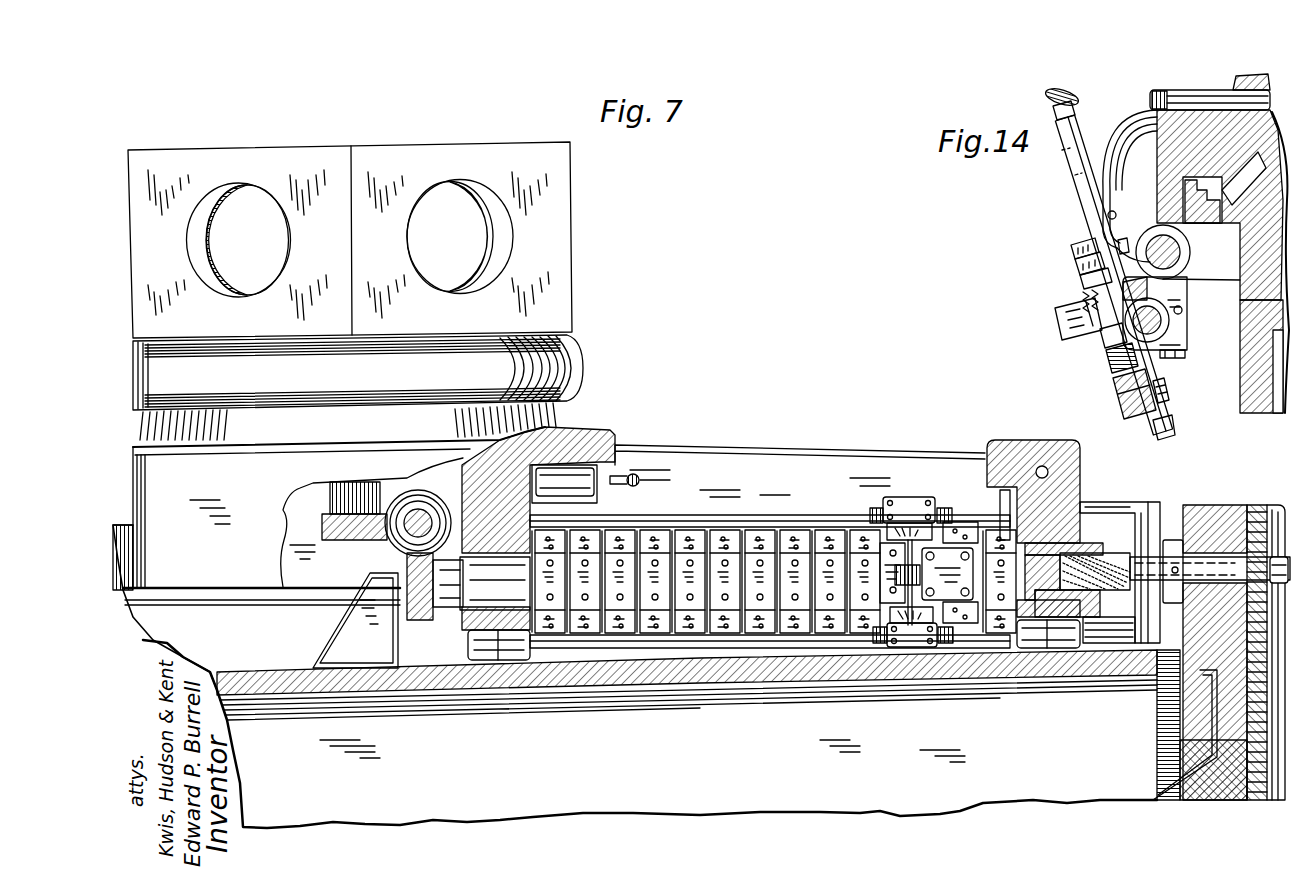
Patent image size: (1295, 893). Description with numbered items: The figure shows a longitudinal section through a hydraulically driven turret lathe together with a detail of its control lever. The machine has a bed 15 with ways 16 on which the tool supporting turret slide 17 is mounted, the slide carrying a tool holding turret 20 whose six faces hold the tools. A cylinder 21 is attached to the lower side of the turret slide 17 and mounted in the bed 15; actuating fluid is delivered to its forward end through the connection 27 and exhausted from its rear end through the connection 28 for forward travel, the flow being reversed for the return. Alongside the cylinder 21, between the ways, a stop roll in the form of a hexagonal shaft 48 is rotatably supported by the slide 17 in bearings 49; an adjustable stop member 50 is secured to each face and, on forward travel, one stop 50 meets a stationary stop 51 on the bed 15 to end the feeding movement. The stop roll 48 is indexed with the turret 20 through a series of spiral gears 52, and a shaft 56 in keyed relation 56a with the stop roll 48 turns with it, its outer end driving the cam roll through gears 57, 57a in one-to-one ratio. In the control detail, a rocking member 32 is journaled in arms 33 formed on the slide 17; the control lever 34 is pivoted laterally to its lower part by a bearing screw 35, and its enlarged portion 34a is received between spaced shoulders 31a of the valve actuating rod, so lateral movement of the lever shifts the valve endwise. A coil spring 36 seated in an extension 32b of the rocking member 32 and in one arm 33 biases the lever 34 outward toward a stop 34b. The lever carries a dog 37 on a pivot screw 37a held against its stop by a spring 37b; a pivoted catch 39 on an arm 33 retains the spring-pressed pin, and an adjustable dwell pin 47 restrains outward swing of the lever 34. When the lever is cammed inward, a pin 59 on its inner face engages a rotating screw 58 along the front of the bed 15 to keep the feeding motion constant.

In FIG. 7, the bed 15 is at (680, 734).
In FIG. 14, the bed 15 is at (1255, 370).
In FIG. 7, the ways 16 is at (128, 528).
In FIG. 14, the ways 16 is at (1230, 160).
In FIG. 7, the turret slide 17 is at (683, 457).
In FIG. 14, the turret slide 17 is at (1178, 100).
In FIG. 7, the tool holding turret 20 is at (555, 228).
In FIG. 7, the cylinder 21 is at (1103, 508).
In FIG. 7, the delivery connection 27 is at (640, 480).
In FIG. 7, the delivery connection 28 is at (1042, 466).
In FIG. 14, the spaced shoulders 31a is at (1165, 333).
In FIG. 14, the rocking member 32 is at (1118, 395).
In FIG. 14, the extension of the rocking member 32b is at (1055, 320).
In FIG. 14, the arms 33 is at (1118, 170).
In FIG. 14, the control lever 34 is at (1062, 140).
In FIG. 14, the enlarged portion of the control lever 34a is at (1182, 310).
In FIG. 14, the rod end 34b is at (1170, 432).
In FIG. 14, the bearing screw 35 is at (1165, 393).
In FIG. 14, the spring 36 is at (1080, 290).
In FIG. 14, the dog 37 is at (1085, 250).
In FIG. 14, the pivot screw 37a is at (1105, 343).
In FIG. 14, the spring 37b is at (1110, 362).
In FIG. 14, the pivoted catch 39 is at (1073, 270).
In FIG. 14, the lever holding member 47 is at (1107, 218).
In FIG. 7, the stop roll 48 is at (762, 615).
In FIG. 7, the bearings 49 is at (498, 650).
In FIG. 7, the stop member 50 is at (870, 518).
In FIG. 7, the stationary stop 51 is at (355, 598).
In FIG. 7, the spiral gears 52 is at (398, 545).
In FIG. 7, the shaft 56 is at (1122, 556).
In FIG. 7, the keyed relation 56a is at (1083, 604).
In FIG. 7, the gear 57 is at (1255, 510).
In FIG. 7, the gear 57a is at (1210, 680).
In FIG. 14, the rotating screw 58 is at (1183, 250).
In FIG. 14, the pin 59 is at (1128, 244).